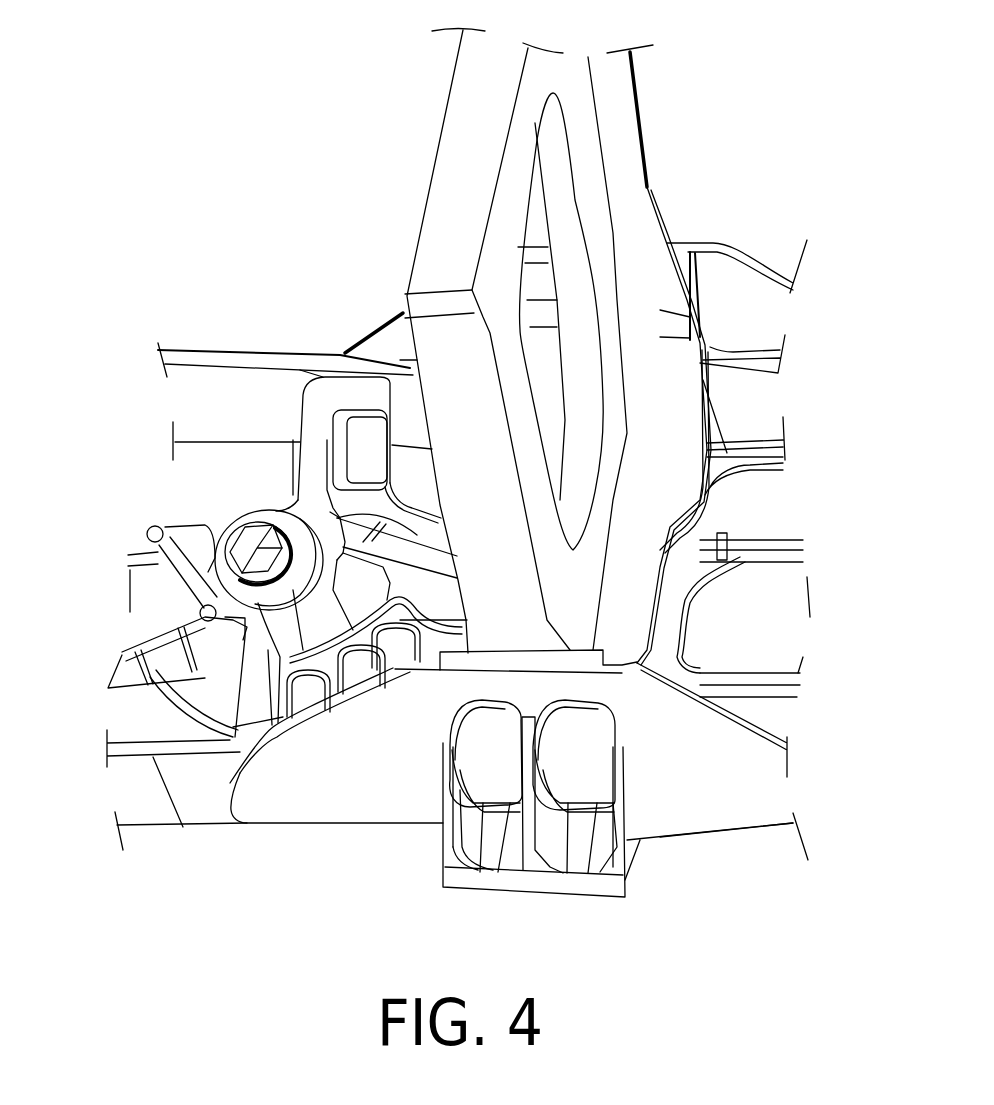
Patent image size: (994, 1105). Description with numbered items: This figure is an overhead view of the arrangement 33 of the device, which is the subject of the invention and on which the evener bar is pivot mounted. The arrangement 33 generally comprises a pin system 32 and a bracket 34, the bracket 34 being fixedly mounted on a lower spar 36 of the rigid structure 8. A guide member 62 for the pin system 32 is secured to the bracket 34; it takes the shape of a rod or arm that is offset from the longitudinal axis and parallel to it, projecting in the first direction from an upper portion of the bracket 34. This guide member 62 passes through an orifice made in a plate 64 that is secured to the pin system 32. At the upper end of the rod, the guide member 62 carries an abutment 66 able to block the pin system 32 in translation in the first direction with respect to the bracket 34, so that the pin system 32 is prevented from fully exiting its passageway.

The rigid structure 8 is at (645, 128).
The pin system 32 is at (247, 540).
The arrangement 33 is at (170, 715).
The bracket 34 is at (310, 460).
The lower spar 36 is at (757, 627).
The guide member 62 is at (167, 565).
The plate 64 is at (195, 601).
The abutment 66 is at (146, 526).